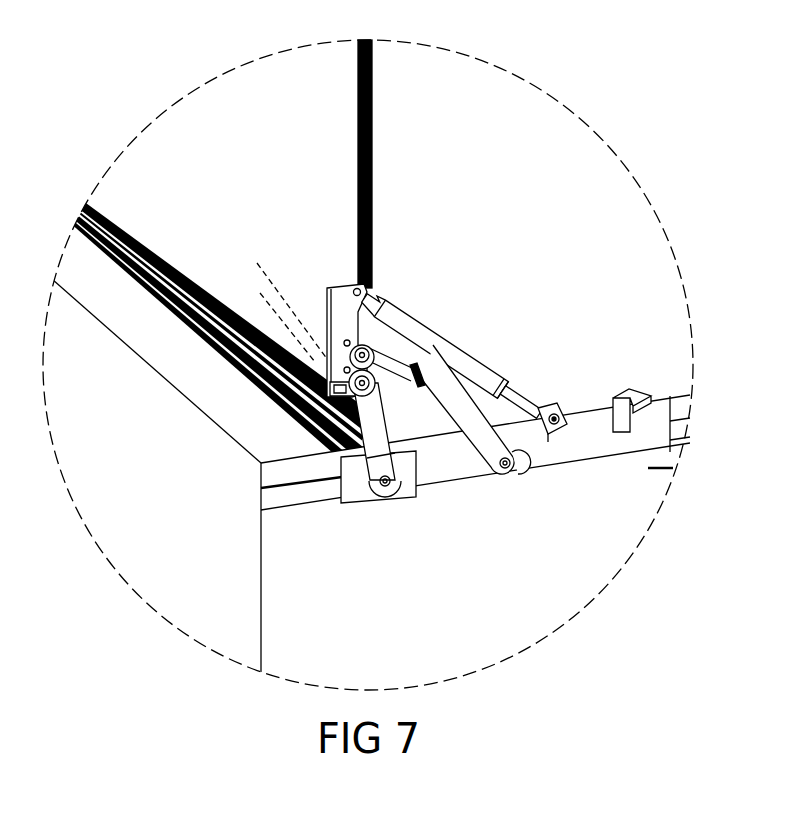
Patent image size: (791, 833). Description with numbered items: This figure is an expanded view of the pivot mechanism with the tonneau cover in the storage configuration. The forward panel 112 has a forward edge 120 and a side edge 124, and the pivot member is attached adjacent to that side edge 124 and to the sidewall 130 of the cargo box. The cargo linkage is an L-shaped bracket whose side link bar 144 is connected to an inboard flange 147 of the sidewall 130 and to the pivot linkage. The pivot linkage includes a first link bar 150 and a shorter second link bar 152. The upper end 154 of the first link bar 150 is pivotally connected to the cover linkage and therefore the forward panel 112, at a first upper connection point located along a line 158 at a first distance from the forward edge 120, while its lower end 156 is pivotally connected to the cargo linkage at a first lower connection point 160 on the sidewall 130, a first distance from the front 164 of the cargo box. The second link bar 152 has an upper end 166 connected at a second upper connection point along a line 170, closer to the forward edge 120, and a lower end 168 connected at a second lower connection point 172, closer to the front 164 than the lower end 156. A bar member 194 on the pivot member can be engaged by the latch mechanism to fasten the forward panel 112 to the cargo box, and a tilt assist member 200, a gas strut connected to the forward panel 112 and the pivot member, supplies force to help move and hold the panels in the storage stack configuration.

The forward panel 112 is at (319, 86).
The forward edge 120 is at (143, 238).
The side edge 124 is at (373, 226).
The sidewall 130 is at (673, 468).
The side link bar 144 is at (655, 425).
The inboard flange 147 is at (303, 472).
The first link bar 150 is at (443, 392).
The second link bar 152 is at (345, 462).
The upper end of the first link bar 154 is at (416, 392).
The lower end of the first link bar 156 is at (520, 455).
The line 158 is at (260, 266).
The first lower connection point 160 is at (498, 465).
The front of the cargo box 164 is at (228, 620).
The upper end of the second link bar 166 is at (433, 343).
The lower end of the second link bar 168 is at (403, 488).
The line 170 is at (268, 301).
The second lower connection point 172 is at (365, 500).
The bar member 194 is at (626, 390).
The tilt assist member 200 is at (505, 388).